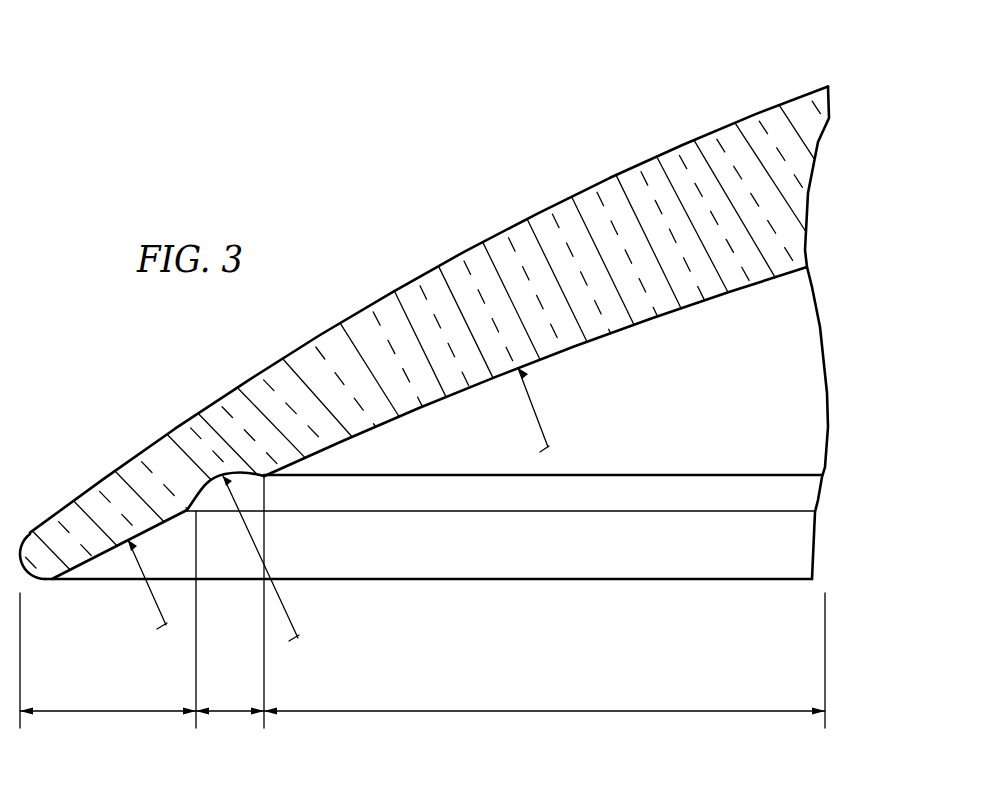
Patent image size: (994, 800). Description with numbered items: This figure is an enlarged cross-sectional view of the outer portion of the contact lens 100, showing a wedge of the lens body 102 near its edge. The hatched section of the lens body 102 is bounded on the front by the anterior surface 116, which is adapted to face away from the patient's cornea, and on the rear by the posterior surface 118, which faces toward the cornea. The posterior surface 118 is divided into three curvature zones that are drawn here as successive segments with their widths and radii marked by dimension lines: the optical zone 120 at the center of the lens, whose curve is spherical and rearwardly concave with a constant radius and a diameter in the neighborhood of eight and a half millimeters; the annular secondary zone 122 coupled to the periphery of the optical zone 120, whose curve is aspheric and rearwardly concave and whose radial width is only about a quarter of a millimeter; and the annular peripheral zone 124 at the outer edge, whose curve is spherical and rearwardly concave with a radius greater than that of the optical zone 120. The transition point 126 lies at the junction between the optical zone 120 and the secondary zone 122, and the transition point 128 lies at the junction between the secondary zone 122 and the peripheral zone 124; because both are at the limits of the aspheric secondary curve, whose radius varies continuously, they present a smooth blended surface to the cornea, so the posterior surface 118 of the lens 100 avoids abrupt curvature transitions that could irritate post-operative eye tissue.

The contact lens 100 is at (353, 201).
The lens body 102 is at (807, 197).
The anterior surface 116 is at (550, 208).
The posterior surface 118 is at (588, 343).
The optical zone 120 is at (686, 308).
The secondary zone 122 is at (213, 500).
The peripheral zone 124 is at (96, 581).
The transition point 126 is at (271, 488).
The transition point 128 is at (191, 519).